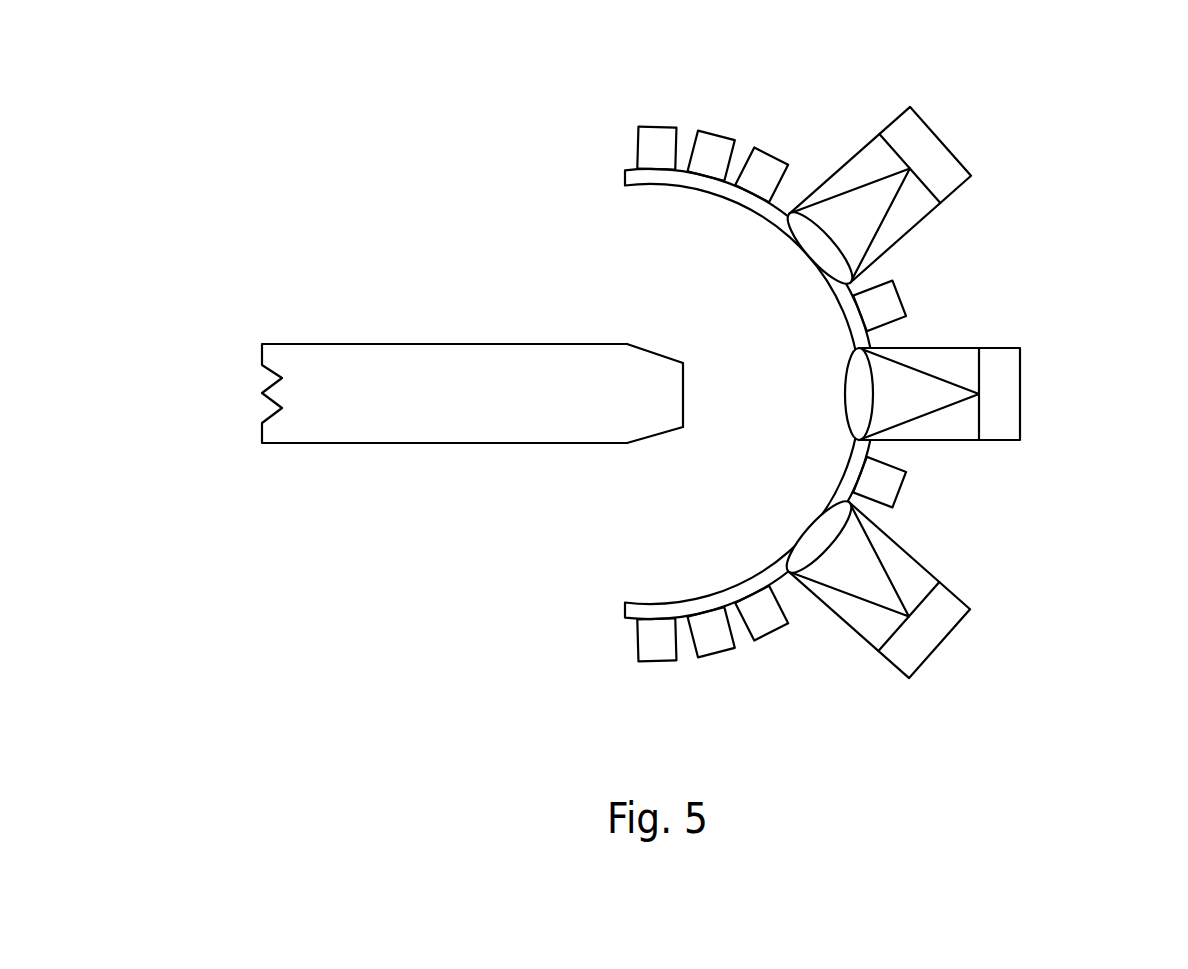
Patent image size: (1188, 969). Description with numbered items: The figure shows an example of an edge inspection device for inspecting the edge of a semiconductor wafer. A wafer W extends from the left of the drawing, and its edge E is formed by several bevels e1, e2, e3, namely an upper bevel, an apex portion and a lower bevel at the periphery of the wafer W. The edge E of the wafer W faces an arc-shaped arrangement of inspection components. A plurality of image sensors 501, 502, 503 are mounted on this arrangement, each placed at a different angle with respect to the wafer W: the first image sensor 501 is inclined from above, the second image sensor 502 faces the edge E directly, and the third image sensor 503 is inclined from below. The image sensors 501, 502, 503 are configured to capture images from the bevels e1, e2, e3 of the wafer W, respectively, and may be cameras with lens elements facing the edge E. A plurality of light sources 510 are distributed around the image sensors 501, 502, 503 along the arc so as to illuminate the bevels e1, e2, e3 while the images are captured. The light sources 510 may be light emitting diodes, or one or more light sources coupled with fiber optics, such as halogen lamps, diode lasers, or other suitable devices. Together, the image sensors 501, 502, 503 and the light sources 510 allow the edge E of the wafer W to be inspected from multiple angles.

The wafer W is at (347, 344).
The edge E is at (722, 361).
The bevel e1 is at (660, 353).
The bevel e2 is at (684, 376).
The bevel e3 is at (660, 434).
The light source 510 is at (655, 140).
The image sensor 501 is at (925, 152).
The image sensor 502 is at (997, 369).
The image sensor 503 is at (925, 632).